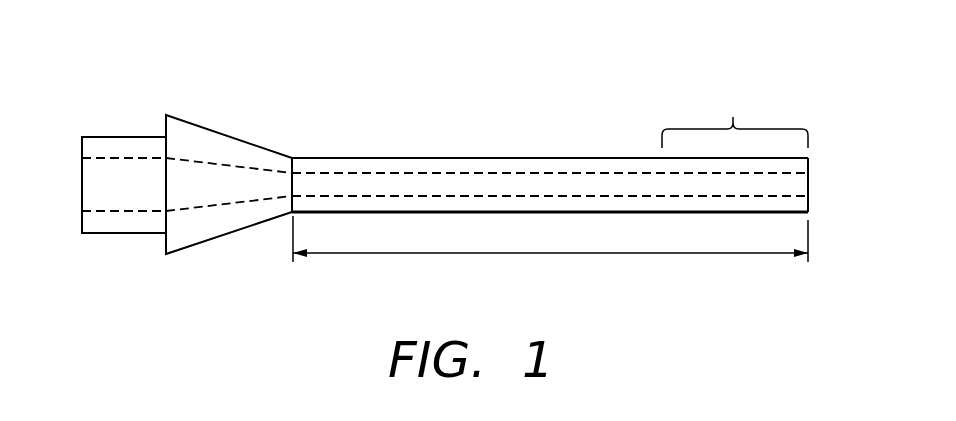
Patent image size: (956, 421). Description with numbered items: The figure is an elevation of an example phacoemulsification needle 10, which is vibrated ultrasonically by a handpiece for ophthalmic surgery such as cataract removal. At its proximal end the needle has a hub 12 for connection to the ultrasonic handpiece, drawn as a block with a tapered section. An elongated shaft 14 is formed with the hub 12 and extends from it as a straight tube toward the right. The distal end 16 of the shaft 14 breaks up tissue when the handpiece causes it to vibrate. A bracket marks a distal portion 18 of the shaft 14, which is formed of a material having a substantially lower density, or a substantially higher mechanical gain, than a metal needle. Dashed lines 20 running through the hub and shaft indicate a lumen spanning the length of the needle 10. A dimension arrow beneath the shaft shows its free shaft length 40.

The phacoemulsification needle 10 is at (444, 153).
The hub 12 is at (210, 108).
The elongated shaft 14 is at (315, 159).
The distal end 16 is at (808, 203).
The distal portion 18 is at (733, 117).
The lumen 20 is at (138, 158).
The free shaft length 40 is at (500, 253).